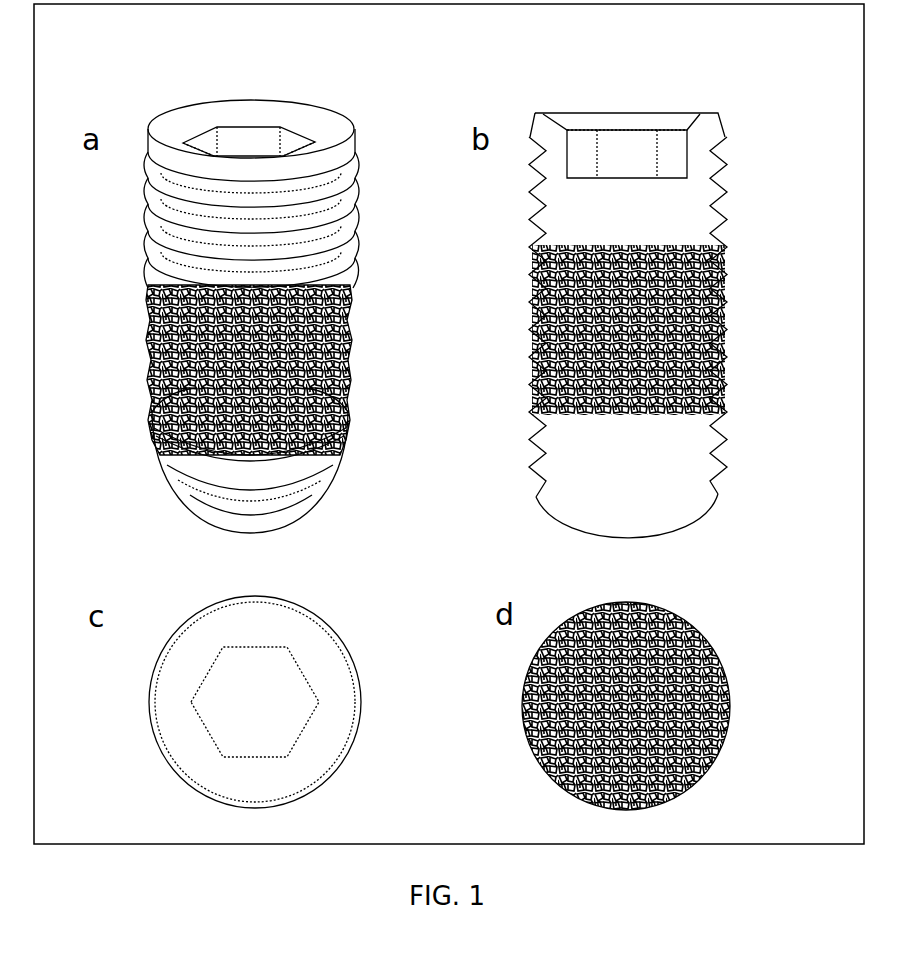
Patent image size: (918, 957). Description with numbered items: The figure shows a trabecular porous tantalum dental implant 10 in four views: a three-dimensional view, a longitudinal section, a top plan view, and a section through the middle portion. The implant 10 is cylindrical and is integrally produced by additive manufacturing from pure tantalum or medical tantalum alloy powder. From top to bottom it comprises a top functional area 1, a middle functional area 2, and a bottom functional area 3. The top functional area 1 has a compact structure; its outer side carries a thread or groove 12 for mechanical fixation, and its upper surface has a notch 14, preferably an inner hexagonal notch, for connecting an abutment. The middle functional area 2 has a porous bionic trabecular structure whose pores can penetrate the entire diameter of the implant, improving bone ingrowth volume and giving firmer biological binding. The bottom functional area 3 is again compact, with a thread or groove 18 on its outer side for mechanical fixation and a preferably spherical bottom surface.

The trabecular porous tantalum dental implant 10 is at (190, 93).
The thread or groove 12 is at (160, 213).
The notch 14 is at (290, 142).
The thread or groove 18 is at (185, 485).
The top functional area 1 is at (703, 178).
The middle functional area 2 is at (700, 328).
The bottom functional area 3 is at (703, 452).